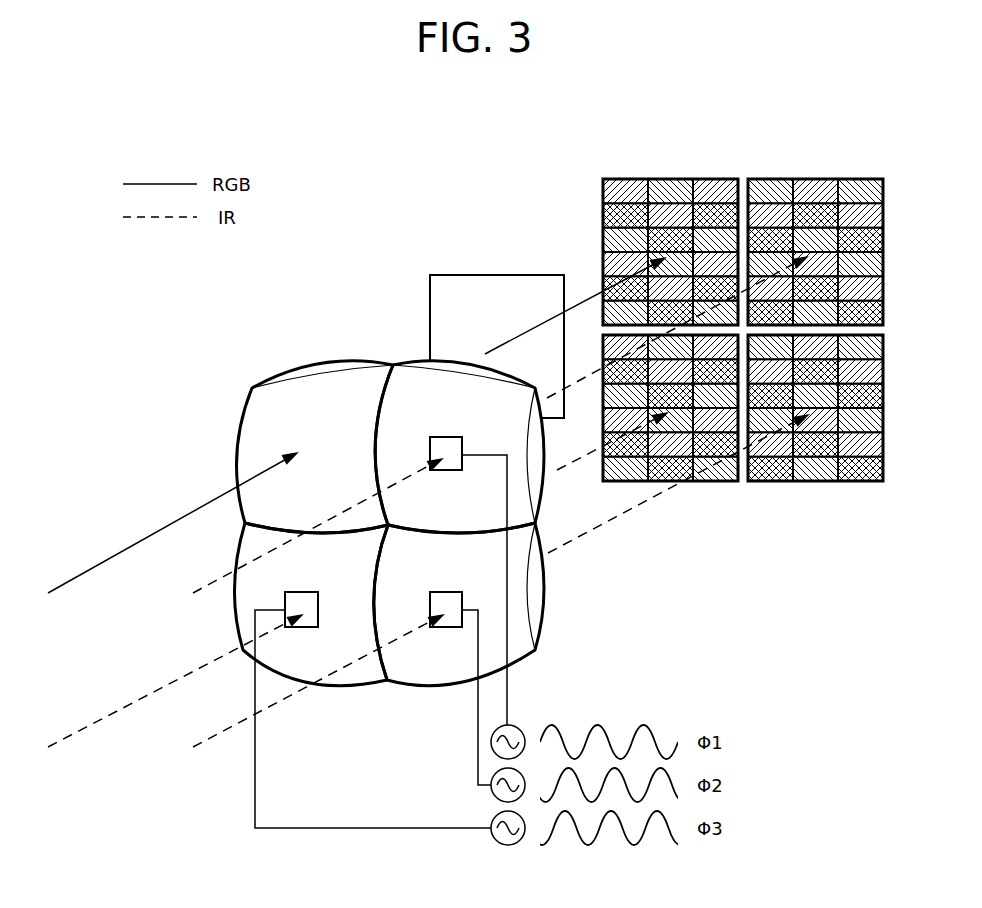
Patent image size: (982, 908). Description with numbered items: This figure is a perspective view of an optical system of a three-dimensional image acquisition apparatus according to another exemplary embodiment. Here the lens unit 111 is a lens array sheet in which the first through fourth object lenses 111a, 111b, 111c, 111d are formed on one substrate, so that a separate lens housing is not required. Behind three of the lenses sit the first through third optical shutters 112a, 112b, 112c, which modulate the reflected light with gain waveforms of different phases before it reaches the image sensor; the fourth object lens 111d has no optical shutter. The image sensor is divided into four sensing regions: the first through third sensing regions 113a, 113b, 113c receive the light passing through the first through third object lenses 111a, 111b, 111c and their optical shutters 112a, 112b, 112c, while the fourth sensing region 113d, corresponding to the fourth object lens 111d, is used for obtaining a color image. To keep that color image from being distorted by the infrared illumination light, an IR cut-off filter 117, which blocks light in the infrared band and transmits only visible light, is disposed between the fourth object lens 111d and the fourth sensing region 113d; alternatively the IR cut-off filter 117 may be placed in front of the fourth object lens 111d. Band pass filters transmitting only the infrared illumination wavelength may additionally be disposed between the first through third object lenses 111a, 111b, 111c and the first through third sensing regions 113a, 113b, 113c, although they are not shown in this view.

The lens unit 111 is at (392, 485).
The first object lens 111a is at (248, 652).
The second object lens 111b is at (547, 636).
The third object lens 111c is at (513, 372).
The fourth object lens 111d is at (252, 388).
The first optical shutter 112a is at (302, 630).
The second optical shutter 112b is at (447, 630).
The third optical shutter 112c is at (438, 437).
The first sensing region 113a is at (707, 482).
The second sensing region 113b is at (845, 482).
The third sensing region 113c is at (820, 180).
The fourth sensing region 113d is at (678, 180).
The IR cut-off filter 117 is at (534, 275).